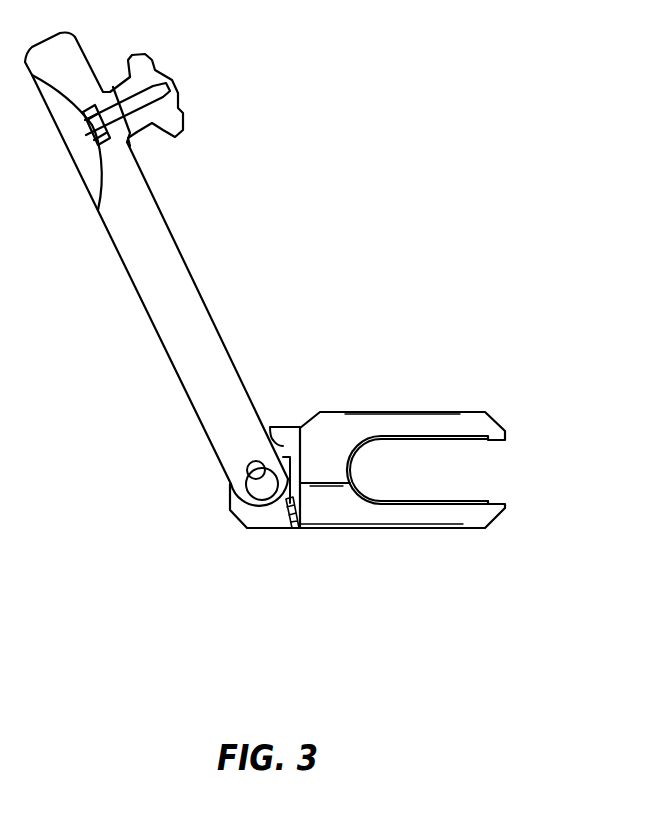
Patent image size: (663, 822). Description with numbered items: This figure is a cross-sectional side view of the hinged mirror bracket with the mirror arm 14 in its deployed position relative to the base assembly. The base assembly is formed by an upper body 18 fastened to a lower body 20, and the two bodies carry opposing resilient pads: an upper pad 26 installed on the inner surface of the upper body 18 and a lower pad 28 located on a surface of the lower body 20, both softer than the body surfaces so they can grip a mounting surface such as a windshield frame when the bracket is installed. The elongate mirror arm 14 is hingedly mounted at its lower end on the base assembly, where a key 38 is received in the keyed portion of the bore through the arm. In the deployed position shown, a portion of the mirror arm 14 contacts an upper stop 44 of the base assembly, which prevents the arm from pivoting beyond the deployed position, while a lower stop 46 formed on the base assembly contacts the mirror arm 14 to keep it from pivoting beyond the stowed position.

The mirror arm 14 is at (183, 253).
The upper body 18 is at (477, 412).
The lower body 20 is at (465, 528).
The upper pad 26 is at (457, 440).
The lower pad 28 is at (457, 499).
The key 38 is at (247, 465).
The upper stop 44 is at (284, 441).
The lower stop 46 is at (281, 528).